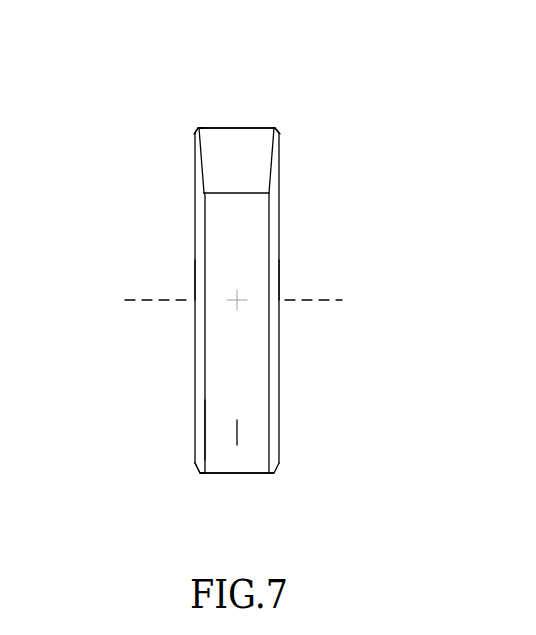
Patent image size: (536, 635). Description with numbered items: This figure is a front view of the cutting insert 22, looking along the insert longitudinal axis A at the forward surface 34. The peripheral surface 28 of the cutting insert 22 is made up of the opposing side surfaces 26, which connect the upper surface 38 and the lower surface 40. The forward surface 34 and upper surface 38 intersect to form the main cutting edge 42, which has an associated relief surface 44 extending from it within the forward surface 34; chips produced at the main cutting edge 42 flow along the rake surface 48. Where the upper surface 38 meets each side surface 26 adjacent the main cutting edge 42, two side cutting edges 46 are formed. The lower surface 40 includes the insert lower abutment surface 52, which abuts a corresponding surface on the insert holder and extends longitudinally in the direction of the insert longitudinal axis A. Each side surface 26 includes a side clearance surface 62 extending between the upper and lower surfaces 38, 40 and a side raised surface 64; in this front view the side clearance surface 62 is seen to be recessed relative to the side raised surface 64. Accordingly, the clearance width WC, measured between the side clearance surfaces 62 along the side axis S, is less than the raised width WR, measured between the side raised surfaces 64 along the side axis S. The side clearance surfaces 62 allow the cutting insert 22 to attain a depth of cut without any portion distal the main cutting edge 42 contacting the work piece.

The cutting insert 22 is at (343, 100).
The side surfaces 26 is at (195, 367).
The peripheral surface 28 is at (245, 432).
The forward surface 34 is at (225, 400).
The upper surface 38 is at (255, 100).
The lower surface 40 is at (257, 493).
The main cutting edge 42 is at (215, 127).
The relief surface 44 is at (258, 153).
The side cutting edges 46 is at (198, 128).
The rake surface 48 is at (235, 100).
The insert lower abutment surface 52 is at (212, 482).
The side clearance surface 62 is at (205, 345).
The side raised surface 64 is at (195, 278).
The insert longitudinal axis A is at (237, 300).
The side axis S is at (241, 300).
The raised width WR is at (108, 205).
The clearance width WC is at (143, 235).